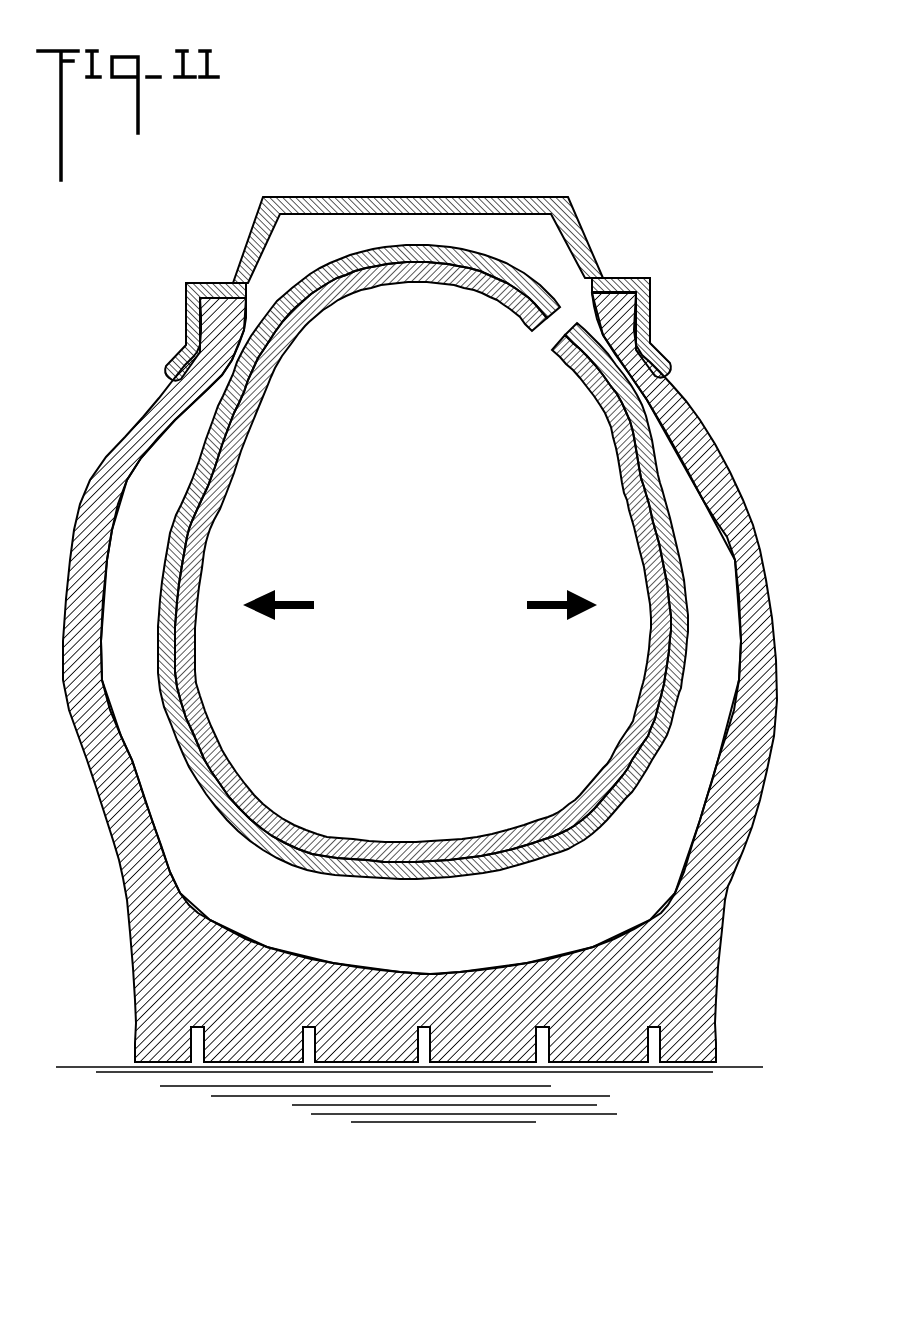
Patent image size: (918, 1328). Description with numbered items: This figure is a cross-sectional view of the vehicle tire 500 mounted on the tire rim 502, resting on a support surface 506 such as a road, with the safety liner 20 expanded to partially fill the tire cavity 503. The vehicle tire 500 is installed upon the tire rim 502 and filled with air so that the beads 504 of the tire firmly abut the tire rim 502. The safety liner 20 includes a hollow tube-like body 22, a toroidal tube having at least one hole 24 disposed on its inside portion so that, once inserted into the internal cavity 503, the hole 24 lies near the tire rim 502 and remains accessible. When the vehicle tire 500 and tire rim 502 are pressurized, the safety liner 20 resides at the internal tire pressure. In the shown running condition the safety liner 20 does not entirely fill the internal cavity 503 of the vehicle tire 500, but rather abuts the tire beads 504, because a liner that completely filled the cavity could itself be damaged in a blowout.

The vehicle tire 500 is at (707, 430).
The tire rim 502 is at (588, 243).
The internal cavity 503 is at (138, 562).
The beads 504 is at (205, 348).
The support surface 506 is at (621, 1082).
The safety liner 20 is at (447, 550).
The hollow tube-like body 22 is at (315, 277).
The hole 24 is at (553, 340).